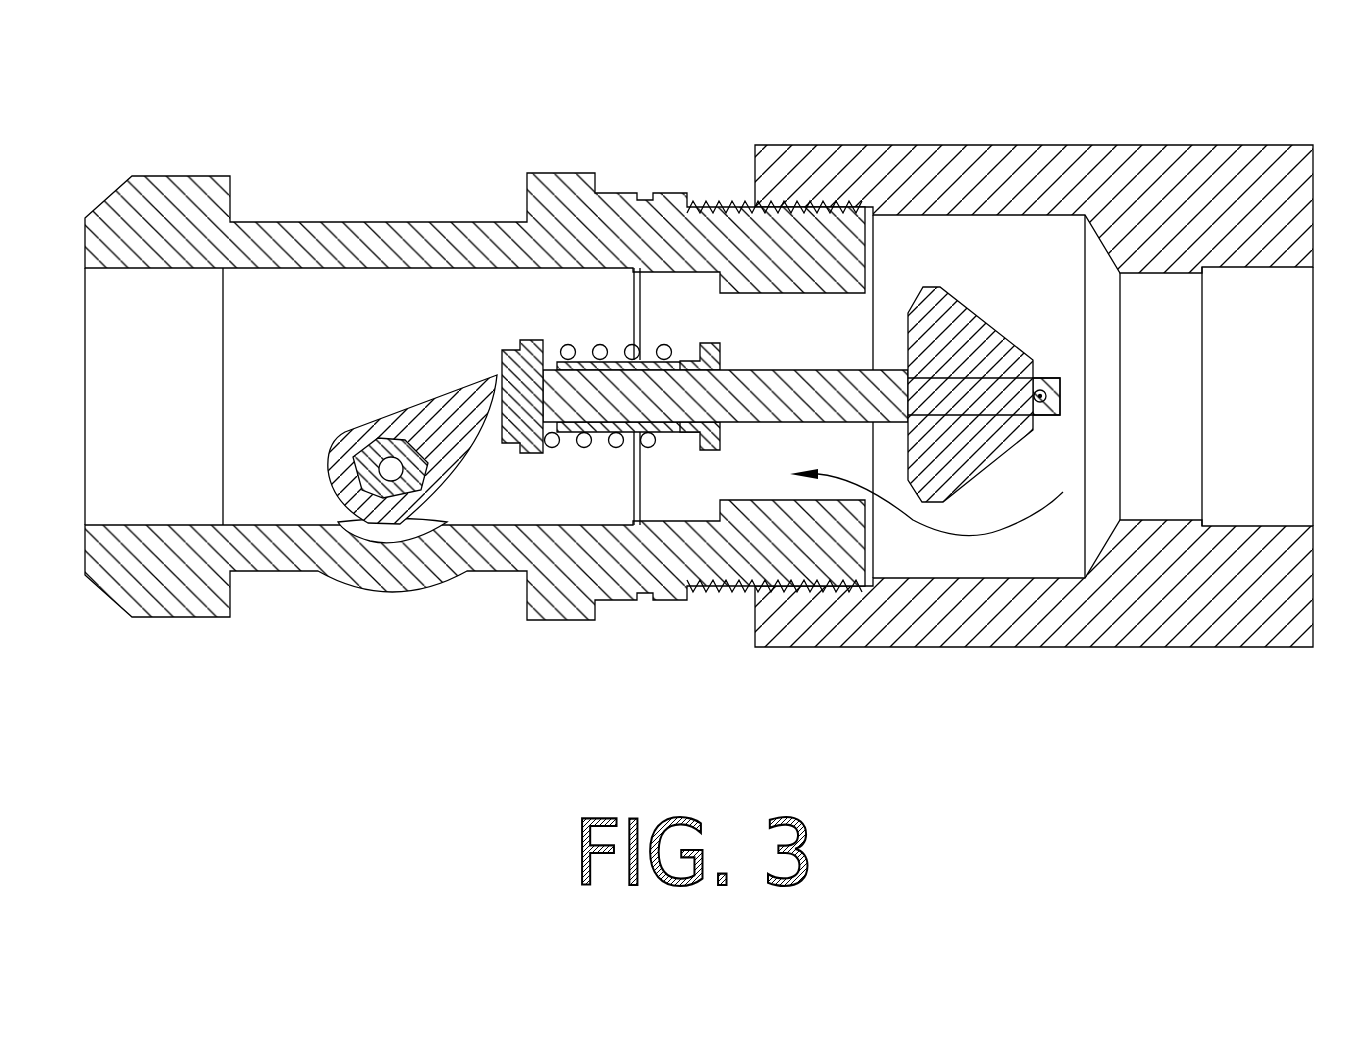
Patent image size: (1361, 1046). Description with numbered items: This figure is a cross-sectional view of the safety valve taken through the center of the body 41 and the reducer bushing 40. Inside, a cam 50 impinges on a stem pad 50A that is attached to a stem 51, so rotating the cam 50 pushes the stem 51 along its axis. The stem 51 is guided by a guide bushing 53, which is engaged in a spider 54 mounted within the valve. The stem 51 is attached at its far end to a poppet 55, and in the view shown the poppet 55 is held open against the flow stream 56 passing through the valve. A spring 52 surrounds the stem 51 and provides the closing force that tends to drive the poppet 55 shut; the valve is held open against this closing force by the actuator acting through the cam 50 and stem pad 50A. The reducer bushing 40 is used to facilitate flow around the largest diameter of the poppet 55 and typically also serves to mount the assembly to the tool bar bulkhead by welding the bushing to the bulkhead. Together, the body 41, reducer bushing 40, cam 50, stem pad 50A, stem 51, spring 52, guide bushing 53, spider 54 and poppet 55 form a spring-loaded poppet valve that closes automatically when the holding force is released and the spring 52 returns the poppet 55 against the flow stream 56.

The reducer bushing 40 is at (1237, 190).
The body 41 is at (178, 200).
The cam 50 is at (420, 412).
The stem pad 50A is at (512, 360).
The stem 51 is at (754, 388).
The spring 52 is at (568, 348).
The guide bushing 53 is at (660, 432).
The spider 54 is at (702, 442).
The poppet 55 is at (958, 340).
The flow stream 56 is at (988, 535).